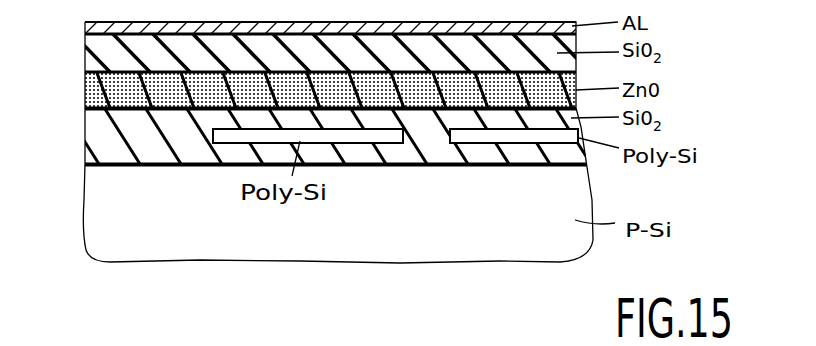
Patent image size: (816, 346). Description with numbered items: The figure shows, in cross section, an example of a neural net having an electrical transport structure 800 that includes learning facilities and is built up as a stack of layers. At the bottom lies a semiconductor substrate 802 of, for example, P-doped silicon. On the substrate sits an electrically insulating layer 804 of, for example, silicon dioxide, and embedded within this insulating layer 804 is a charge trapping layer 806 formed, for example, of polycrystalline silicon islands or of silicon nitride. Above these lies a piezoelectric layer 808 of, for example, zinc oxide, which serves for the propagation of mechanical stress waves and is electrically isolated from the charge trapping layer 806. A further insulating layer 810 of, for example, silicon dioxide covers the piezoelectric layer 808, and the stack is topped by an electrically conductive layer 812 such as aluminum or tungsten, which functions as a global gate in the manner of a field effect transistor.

The electrical transport structure 800 is at (472, 318).
The semiconductor substrate 802 is at (108, 192).
The electrically insulating layer 804 is at (223, 155).
The charge trapping layer 806 is at (456, 147).
The piezoelectric layer 808 is at (85, 90).
The insulating layer 810 is at (103, 52).
The electrically conductive layer 812 is at (85, 31).